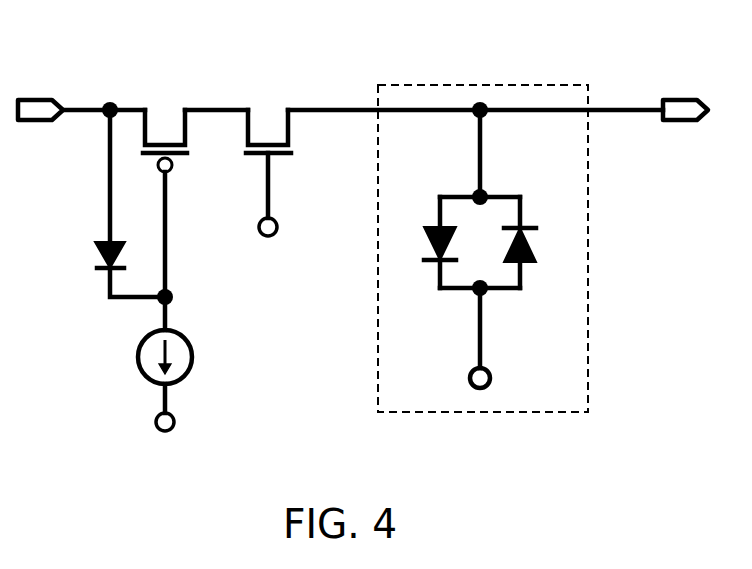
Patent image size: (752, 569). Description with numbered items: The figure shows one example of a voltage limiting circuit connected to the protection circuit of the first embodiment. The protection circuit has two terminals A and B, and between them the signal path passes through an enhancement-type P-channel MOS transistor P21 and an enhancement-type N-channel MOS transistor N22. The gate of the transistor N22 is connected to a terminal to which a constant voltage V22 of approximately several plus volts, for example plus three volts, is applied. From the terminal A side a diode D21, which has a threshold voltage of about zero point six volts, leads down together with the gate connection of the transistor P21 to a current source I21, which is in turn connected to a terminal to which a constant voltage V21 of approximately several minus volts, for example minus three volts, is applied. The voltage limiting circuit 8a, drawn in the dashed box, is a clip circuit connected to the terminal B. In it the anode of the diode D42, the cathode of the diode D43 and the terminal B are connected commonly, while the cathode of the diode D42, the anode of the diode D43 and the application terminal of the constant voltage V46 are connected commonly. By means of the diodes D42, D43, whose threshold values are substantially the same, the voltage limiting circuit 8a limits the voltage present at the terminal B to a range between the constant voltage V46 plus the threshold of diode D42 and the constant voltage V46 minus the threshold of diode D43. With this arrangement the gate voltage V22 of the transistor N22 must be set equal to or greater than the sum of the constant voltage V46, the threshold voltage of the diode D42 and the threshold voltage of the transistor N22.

The terminal A is at (36, 98).
The terminal B is at (685, 98).
The enhancement-type P-channel MOS transistor P21 is at (170, 113).
The enhancement-type N-channel MOS transistor N22 is at (268, 108).
The constant voltage V22 is at (278, 222).
The diode D21 is at (95, 260).
The current source I21 is at (138, 362).
The constant voltage V21 is at (158, 424).
The voltage limiting circuit 8a is at (467, 85).
The diode D42 is at (430, 238).
The diode D43 is at (536, 256).
The constant voltage V46 is at (470, 382).